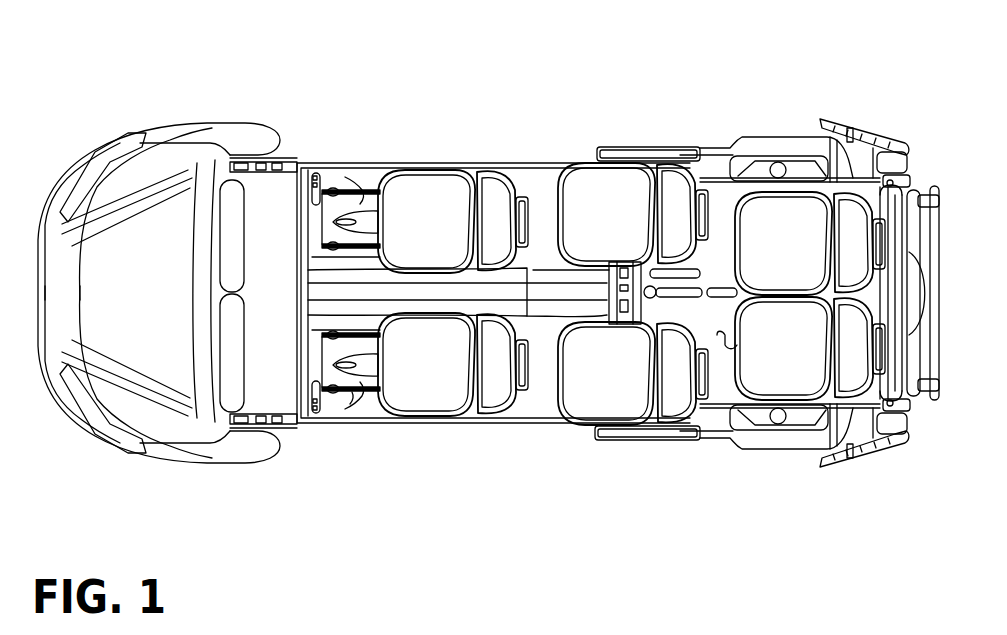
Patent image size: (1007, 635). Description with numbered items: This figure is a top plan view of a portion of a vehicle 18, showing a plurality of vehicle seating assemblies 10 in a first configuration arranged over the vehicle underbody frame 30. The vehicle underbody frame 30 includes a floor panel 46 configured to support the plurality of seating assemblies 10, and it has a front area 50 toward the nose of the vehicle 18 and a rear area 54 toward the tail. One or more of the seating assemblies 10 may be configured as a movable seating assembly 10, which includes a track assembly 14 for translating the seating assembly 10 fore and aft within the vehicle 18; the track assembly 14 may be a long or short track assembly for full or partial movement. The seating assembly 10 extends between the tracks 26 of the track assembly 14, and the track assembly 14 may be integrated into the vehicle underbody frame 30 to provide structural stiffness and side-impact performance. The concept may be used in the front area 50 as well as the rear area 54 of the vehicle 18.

The vehicle seating assembly 10 is at (425, 200).
The track assembly 14 is at (360, 189).
The vehicle 18 is at (805, 86).
The tracks 26 is at (338, 172).
The vehicle underbody frame 30 is at (353, 413).
The floor panel 46 is at (547, 400).
The front area 50 is at (282, 196).
The rear area 54 is at (729, 396).